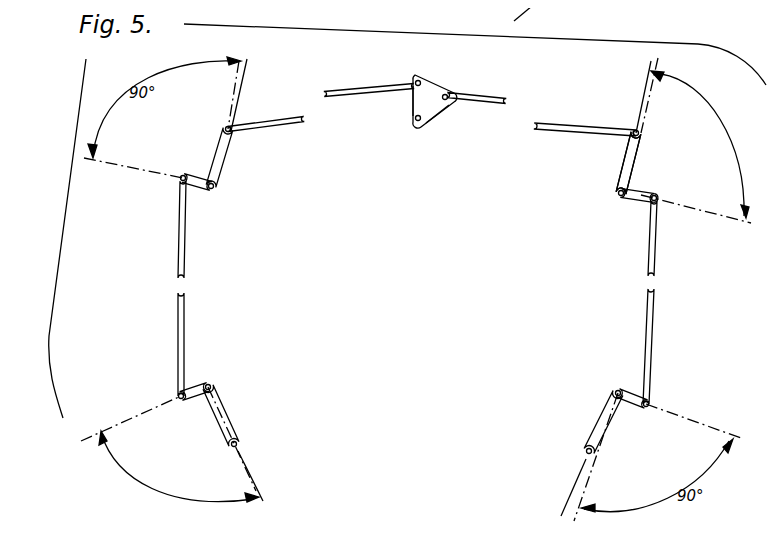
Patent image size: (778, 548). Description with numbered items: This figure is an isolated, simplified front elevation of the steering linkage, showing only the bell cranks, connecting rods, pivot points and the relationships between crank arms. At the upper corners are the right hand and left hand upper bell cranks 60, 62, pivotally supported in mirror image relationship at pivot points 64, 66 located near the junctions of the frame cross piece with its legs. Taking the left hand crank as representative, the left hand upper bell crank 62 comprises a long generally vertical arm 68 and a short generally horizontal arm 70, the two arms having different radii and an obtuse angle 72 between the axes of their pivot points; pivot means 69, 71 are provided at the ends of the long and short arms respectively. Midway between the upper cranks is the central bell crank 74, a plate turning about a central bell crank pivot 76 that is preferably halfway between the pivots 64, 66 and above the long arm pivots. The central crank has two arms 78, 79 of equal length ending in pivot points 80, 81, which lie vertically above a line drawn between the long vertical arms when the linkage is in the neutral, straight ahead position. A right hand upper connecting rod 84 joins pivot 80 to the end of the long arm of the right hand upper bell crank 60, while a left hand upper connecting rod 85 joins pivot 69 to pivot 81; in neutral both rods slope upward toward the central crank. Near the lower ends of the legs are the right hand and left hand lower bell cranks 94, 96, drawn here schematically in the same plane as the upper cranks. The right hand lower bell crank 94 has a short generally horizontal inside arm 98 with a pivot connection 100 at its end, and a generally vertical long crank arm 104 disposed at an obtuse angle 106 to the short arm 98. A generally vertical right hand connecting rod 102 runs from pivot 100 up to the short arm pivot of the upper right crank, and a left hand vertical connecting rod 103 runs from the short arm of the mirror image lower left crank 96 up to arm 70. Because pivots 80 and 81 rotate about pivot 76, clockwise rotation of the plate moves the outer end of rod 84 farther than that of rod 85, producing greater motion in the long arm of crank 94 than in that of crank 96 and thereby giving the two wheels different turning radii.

The right hand upper bell crank 60 is at (226, 172).
The pivot point of right hand upper bell crank 64 is at (215, 195).
The right hand upper connecting rod 84 is at (293, 116).
The central bell crank 74 is at (431, 95).
The pivot point 80 is at (417, 80).
The central bell crank pivot 76 is at (417, 121).
The arm of central bell crank 78 is at (410, 98).
The arm of central bell crank 79 is at (438, 113).
The pivot point 81 is at (452, 92).
The left hand upper connecting rod 85 is at (538, 120).
The left hand upper bell crank 62 is at (618, 167).
The long generally vertical arm 68 is at (640, 160).
The pivot means 69 is at (640, 132).
The pivot point of left hand upper bell crank 66 is at (618, 200).
The short generally horizontal arm 70 is at (650, 195).
The pivot means 71 is at (660, 198).
The obtuse angle 72 is at (700, 144).
The right hand connecting rod 102 is at (185, 275).
The left hand vertical connecting rod 103 is at (657, 325).
The pivot connection 100 is at (177, 393).
The short inside arm 98 is at (185, 400).
The right hand lower bell crank 94 is at (212, 382).
The long crank arm 104 is at (240, 425).
The obtuse angle 106 is at (179, 468).
The left hand lower bell crank 96 is at (614, 385).